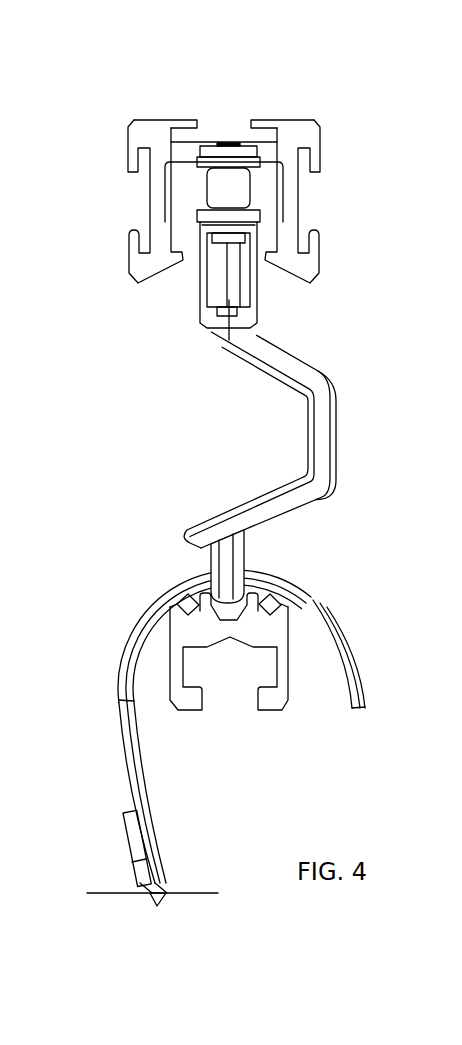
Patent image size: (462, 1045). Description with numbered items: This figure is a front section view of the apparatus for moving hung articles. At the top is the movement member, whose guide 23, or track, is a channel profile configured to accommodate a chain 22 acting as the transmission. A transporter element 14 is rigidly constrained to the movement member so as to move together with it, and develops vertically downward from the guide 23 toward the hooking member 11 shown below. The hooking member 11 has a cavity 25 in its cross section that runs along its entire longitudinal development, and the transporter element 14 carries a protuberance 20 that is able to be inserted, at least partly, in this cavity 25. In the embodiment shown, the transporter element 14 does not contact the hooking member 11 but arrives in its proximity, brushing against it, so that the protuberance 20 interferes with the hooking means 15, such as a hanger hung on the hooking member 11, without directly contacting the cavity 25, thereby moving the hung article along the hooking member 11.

The hooking member 11 is at (285, 120).
The guide 23 is at (153, 134).
The chain 22 is at (222, 188).
The transporter element 14 is at (308, 358).
The hooking means 15 is at (137, 753).
The protuberance 20 is at (226, 561).
The cavity 25 is at (236, 608).